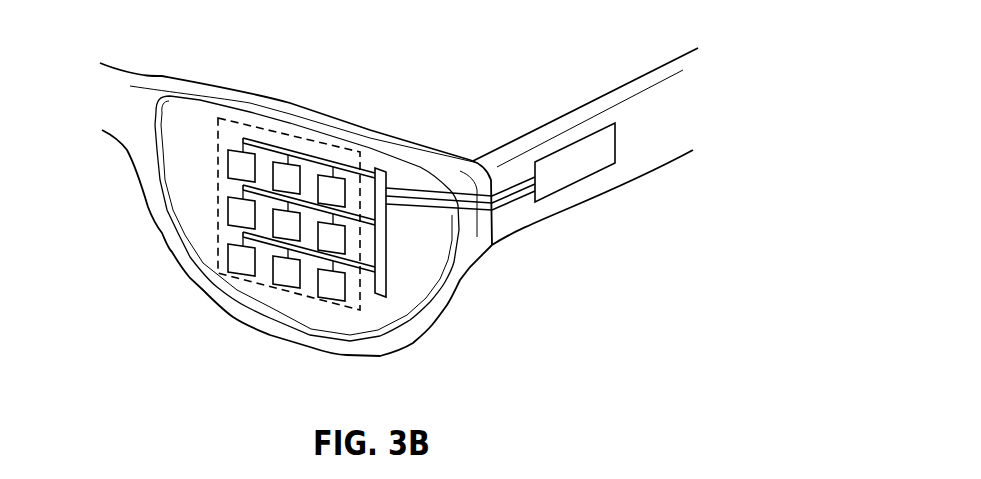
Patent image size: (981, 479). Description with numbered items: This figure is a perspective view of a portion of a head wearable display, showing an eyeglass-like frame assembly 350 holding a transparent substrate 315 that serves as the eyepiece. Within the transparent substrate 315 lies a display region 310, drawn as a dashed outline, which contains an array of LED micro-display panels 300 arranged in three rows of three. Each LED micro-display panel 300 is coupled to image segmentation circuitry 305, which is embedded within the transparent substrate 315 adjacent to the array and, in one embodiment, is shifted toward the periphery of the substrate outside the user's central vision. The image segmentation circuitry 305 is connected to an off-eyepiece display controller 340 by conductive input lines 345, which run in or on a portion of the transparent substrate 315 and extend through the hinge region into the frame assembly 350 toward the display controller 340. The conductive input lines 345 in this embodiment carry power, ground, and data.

The LED micro-display panel 300 is at (233, 152).
The image segmentation circuitry 305 is at (383, 175).
The display region 310 is at (308, 143).
The transparent substrate 315 is at (193, 202).
The display controller 340 is at (575, 162).
The conductive input lines 345 is at (515, 212).
The frame assembly 350 is at (478, 243).